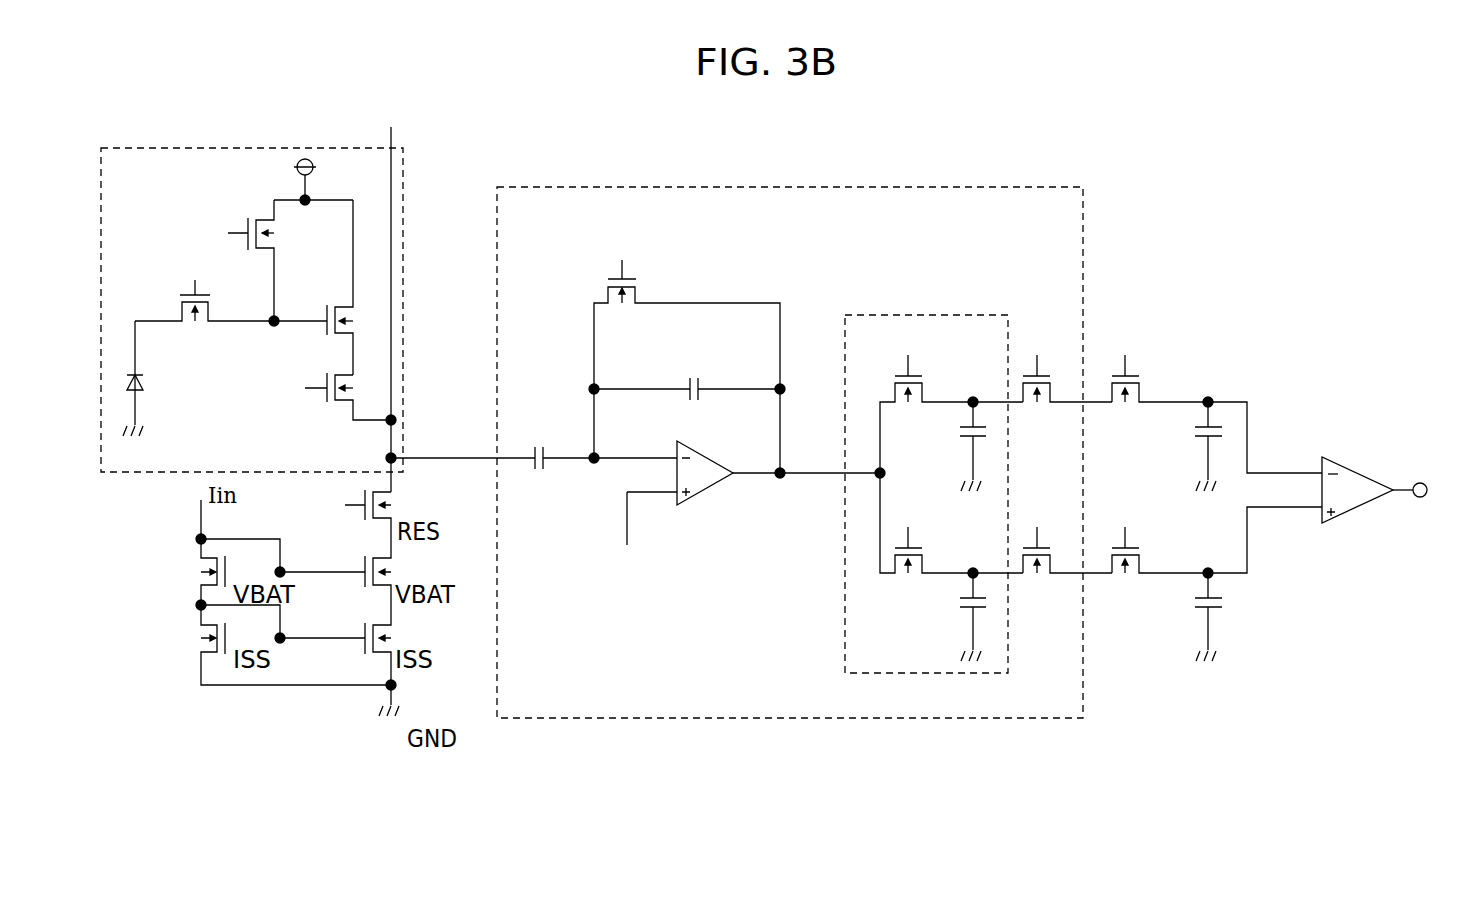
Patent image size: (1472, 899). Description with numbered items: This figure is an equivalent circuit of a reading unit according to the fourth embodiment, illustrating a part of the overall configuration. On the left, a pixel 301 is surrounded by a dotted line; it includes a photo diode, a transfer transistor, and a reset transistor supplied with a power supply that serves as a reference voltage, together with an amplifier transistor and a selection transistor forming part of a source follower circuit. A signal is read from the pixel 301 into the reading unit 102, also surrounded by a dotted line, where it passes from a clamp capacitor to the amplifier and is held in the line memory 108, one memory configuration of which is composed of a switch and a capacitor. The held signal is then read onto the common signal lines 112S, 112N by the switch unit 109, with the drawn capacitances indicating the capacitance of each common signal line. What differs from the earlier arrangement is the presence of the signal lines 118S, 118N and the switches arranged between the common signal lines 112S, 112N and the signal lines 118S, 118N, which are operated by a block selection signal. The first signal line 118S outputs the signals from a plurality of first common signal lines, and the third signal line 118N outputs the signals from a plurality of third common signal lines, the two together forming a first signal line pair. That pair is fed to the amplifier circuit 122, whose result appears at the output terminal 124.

The pixel 301 is at (240, 147).
The reading unit 102 is at (990, 187).
The line memory 108 is at (938, 315).
The switch unit 109 is at (1040, 400).
The common signal line 112N is at (1095, 400).
The common signal line 112S is at (1092, 575).
The third signal line 118N is at (1307, 468).
The first signal line 118S is at (1307, 508).
The amplifier circuit 122 is at (1370, 512).
The output terminal 124 is at (1420, 482).